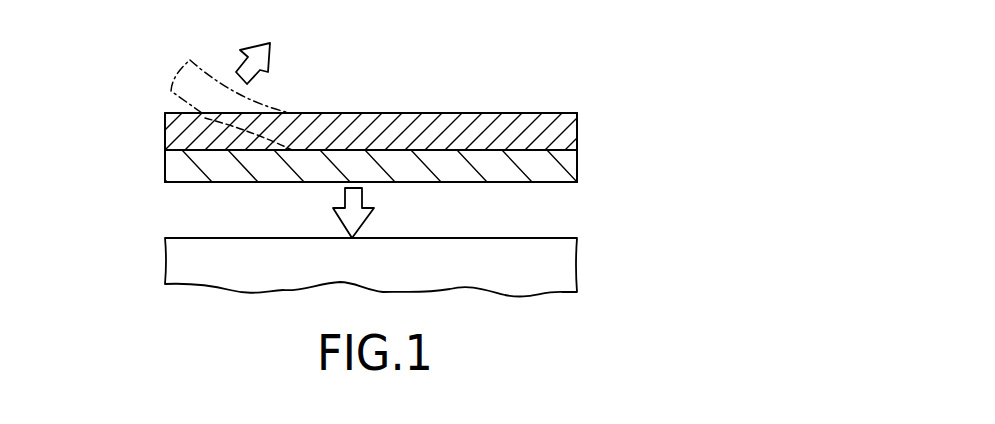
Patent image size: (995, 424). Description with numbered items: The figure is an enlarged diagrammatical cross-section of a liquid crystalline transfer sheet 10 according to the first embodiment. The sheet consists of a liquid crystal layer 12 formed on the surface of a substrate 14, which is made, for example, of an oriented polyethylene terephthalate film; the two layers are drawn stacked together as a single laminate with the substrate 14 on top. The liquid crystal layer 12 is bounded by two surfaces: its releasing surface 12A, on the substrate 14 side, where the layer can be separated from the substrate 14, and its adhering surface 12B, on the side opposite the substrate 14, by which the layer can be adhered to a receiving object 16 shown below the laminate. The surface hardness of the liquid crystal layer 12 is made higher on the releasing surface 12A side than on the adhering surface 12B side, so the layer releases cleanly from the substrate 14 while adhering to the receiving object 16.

The liquid crystalline transfer sheet 10 is at (150, 91).
The liquid crystal layer 12 is at (600, 150).
The releasing surface 12A is at (397, 150).
The adhering surface 12B is at (203, 183).
The substrate 14 is at (600, 113).
The receiving object 16 is at (560, 270).